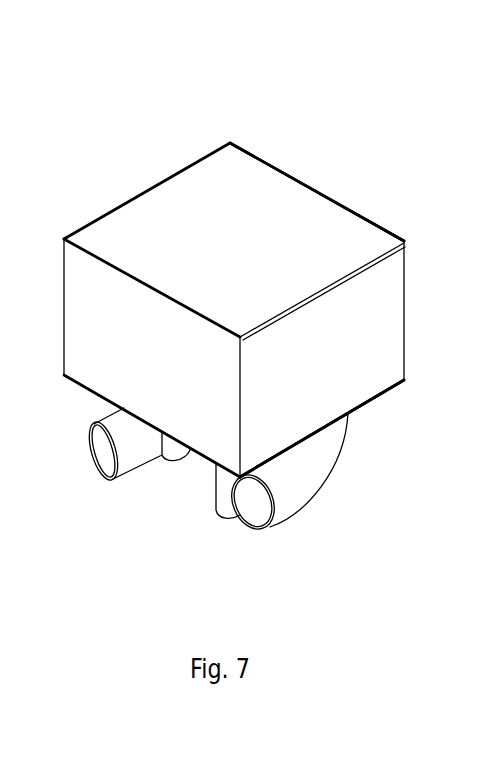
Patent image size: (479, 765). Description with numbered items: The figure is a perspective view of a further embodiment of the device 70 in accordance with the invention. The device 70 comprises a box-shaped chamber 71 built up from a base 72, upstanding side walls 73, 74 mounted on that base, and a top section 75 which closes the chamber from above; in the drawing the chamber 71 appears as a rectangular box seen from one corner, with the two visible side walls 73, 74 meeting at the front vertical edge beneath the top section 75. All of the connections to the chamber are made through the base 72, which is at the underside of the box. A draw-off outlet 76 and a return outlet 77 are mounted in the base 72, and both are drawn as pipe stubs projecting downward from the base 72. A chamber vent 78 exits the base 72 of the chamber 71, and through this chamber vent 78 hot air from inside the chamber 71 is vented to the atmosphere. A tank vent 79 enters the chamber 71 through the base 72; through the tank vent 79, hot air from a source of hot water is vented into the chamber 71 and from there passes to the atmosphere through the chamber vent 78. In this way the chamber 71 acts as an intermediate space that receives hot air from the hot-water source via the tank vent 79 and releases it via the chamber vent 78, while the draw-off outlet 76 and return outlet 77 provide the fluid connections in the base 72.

The device 70 is at (147, 113).
The box-shaped chamber 71 is at (130, 222).
The base 72 is at (383, 393).
The upstanding side wall 73 is at (88, 364).
The upstanding side wall 74 is at (388, 313).
The top section 75 is at (330, 210).
The draw-off outlet 76 is at (122, 462).
The return outlet 77 is at (305, 478).
The chamber vent 78 is at (175, 459).
The tank vent 79 is at (225, 502).